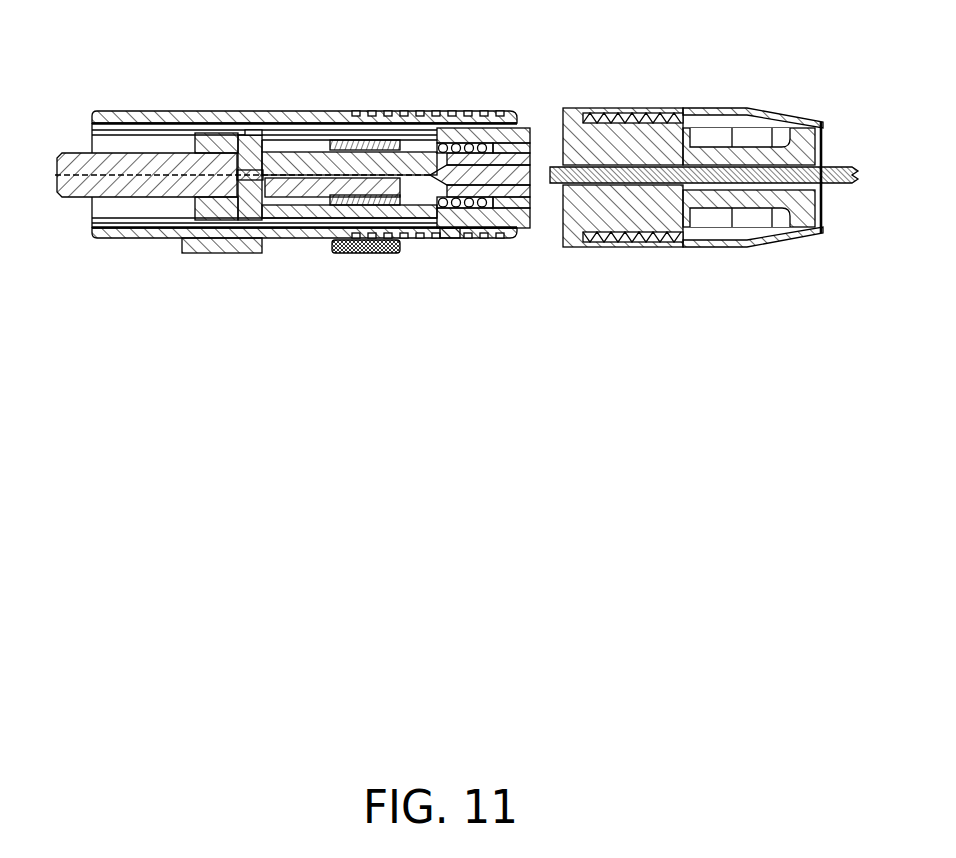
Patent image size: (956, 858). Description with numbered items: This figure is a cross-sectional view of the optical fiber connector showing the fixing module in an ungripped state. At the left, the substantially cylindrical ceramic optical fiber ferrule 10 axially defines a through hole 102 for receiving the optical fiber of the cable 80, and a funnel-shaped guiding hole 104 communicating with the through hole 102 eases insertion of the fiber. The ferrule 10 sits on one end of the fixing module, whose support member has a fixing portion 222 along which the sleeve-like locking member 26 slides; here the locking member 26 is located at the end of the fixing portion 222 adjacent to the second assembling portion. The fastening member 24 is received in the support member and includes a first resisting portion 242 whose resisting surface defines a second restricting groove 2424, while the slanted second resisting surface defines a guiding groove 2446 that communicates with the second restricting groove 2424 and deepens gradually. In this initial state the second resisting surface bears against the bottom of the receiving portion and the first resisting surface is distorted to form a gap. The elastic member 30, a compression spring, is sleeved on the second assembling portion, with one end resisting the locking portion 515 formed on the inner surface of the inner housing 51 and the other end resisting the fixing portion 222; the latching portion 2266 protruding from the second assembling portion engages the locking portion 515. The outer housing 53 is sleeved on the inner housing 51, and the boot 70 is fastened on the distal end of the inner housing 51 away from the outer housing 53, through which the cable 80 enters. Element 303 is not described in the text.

The optical fiber ferrule 10 is at (73, 187).
The through hole 102 is at (70, 170).
The guiding hole 104 is at (215, 133).
The inner housing 51 is at (137, 232).
The outer housing 53 is at (206, 242).
The fastening member 24 is at (297, 195).
The first resisting portion 242 is at (310, 198).
The second restricting groove 2424 is at (252, 130).
The fixing portion 222 is at (310, 140).
The elastic member 30 is at (463, 143).
The retaining ring 303 is at (374, 253).
The locking member 26 is at (412, 232).
The guiding groove 2446 is at (447, 237).
The locking portion 515 is at (504, 150).
The latching portion 2266 is at (520, 150).
The boot 70 is at (705, 230).
The cable 80 is at (842, 183).